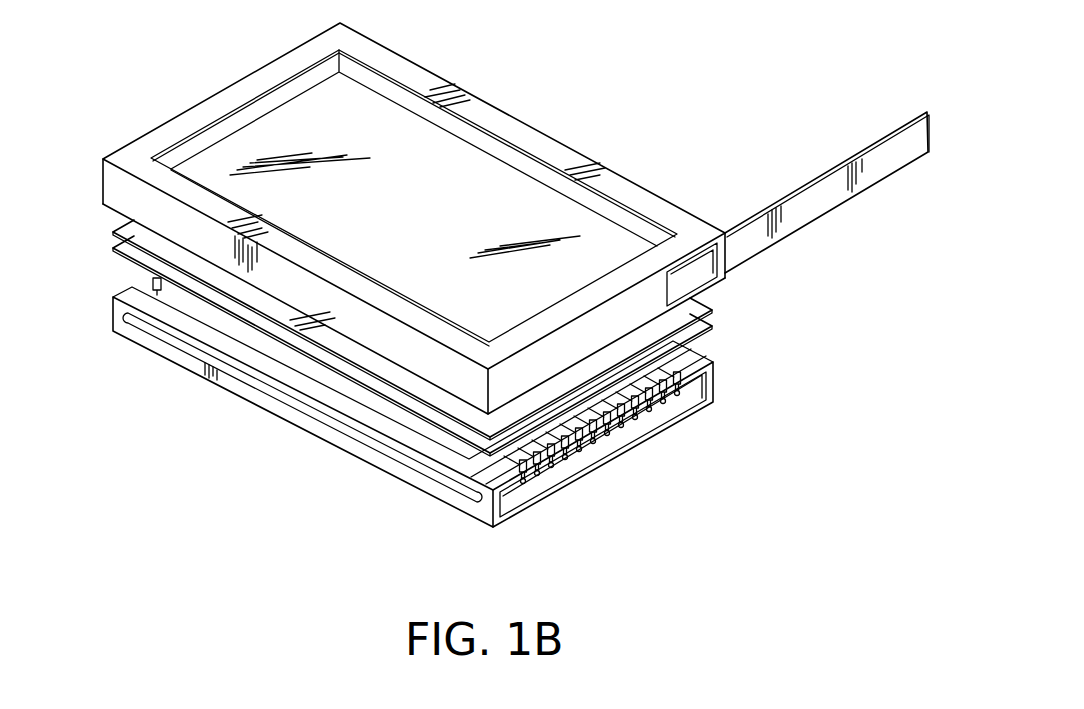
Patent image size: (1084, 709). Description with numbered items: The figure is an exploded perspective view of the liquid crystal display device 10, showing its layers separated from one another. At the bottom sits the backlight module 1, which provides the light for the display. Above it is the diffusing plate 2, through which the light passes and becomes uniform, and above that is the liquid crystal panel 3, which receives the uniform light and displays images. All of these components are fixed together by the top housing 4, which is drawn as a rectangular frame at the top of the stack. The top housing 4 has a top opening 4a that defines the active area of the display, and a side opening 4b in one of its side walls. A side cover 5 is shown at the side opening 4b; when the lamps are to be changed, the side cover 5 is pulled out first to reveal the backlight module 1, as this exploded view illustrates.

The liquid crystal display device 10 is at (675, 148).
The top housing 4 is at (205, 250).
The top opening 4a is at (198, 135).
The side opening 4b is at (697, 285).
The side cover 5 is at (810, 215).
The liquid crystal panel 3 is at (272, 303).
The diffusing plate 2 is at (308, 348).
The backlight module 1 is at (397, 480).